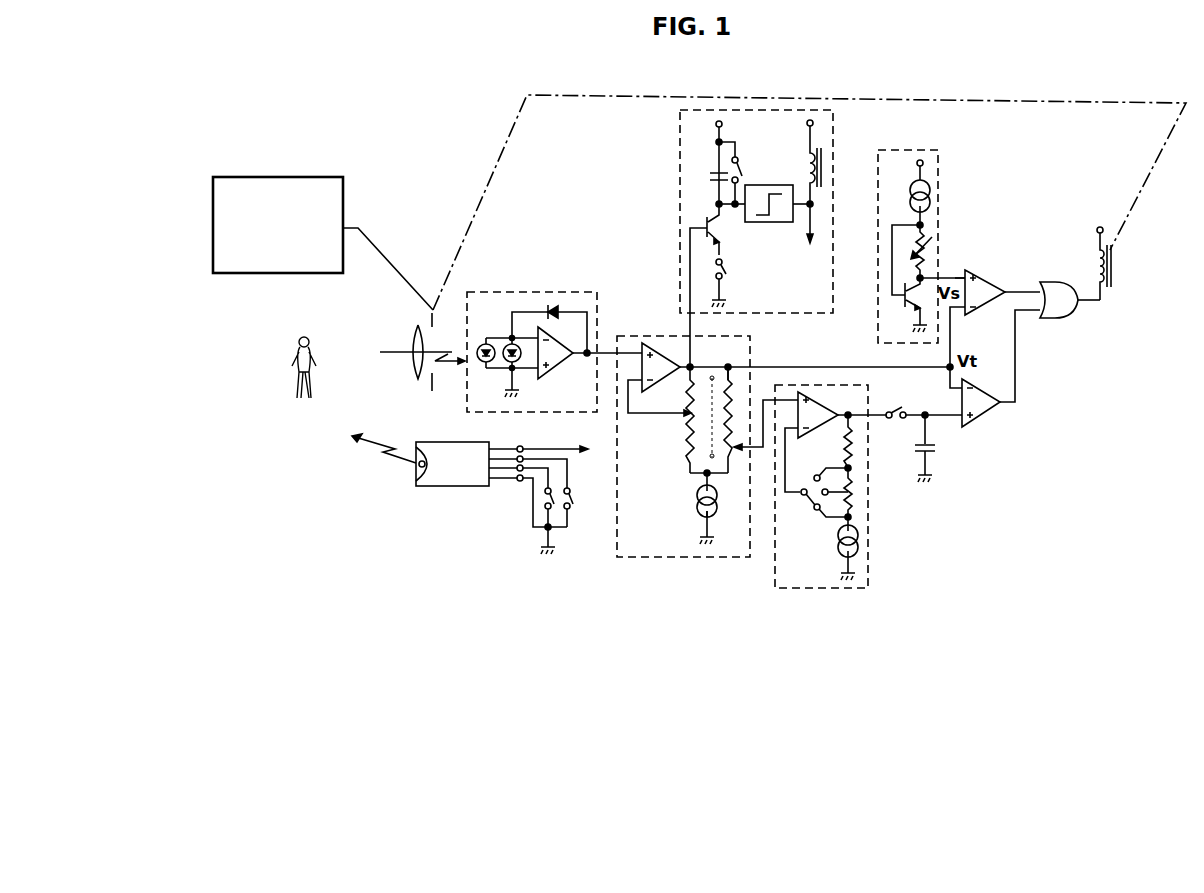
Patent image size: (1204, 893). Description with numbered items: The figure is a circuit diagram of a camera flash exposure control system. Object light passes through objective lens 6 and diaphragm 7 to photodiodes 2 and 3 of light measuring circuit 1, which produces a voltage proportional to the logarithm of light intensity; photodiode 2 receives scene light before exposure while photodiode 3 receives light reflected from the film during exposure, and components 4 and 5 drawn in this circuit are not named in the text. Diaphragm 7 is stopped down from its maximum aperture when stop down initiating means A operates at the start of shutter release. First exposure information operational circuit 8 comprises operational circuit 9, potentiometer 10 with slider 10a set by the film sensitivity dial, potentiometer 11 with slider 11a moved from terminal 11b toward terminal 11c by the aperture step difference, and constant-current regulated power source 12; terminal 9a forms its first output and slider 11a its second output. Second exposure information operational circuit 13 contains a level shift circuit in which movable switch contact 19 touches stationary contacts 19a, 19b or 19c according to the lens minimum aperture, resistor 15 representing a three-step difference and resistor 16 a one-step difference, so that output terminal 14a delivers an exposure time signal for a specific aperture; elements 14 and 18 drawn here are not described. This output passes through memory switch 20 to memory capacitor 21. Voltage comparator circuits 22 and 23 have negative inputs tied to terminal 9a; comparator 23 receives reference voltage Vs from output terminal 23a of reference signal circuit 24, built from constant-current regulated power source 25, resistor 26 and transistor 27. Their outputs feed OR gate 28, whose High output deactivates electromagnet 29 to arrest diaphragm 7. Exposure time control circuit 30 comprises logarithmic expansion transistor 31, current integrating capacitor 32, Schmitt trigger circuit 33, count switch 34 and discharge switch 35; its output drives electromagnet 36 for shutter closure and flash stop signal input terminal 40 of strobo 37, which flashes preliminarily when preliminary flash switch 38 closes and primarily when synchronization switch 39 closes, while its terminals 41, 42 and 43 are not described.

The diaphragm stop down initiating means A is at (290, 176).
The light measuring circuit 1 is at (527, 291).
The photodiode 2 is at (486, 364).
The photodiode 3 is at (514, 364).
The operational amplifier 4 is at (556, 367).
The logarithmic compression diode 5 is at (556, 318).
The objective lens 6 is at (411, 363).
The diaphragm 7 is at (430, 382).
The first exposure information operational circuit 8 is at (667, 560).
The operational circuit 9 is at (655, 378).
The terminal 9a is at (693, 365).
The potentiometer 10 is at (686, 440).
The slider 10a is at (647, 414).
The potentiometer 11 is at (732, 415).
The slider 11a is at (726, 452).
The terminal 11b is at (733, 405).
The terminal 11c is at (736, 513).
The constant-current regulated power source 12 is at (696, 516).
The second exposure information operational circuit 13 is at (836, 592).
The operational amplifier 14 is at (822, 397).
The output terminal 14a is at (852, 412).
The resistor 15 is at (853, 457).
The resistor 16 is at (853, 490).
The constant current source 18 is at (859, 547).
The movable switch contact 19 is at (807, 496).
The stationary contact 19a is at (818, 474).
The stationary contact 19b is at (823, 488).
The stationary contact 19c is at (818, 512).
The memory switch 20 is at (898, 419).
The memory capacitor 21 is at (933, 447).
The voltage comparator circuit 22 is at (986, 418).
The voltage comparator circuit 23 is at (982, 310).
The output terminal 23a is at (957, 277).
The reference signal circuit 24 is at (928, 150).
The constant-current regulated power source 25 is at (930, 195).
The resistor 26 is at (926, 241).
The transistor 27 is at (898, 307).
The OR gate 28 is at (1045, 318).
The electromagnet 29 is at (1112, 273).
The exposure time control circuit 30 is at (838, 150).
The transistor 31 is at (725, 230).
The current integrating capacitor 32 is at (710, 176).
The Schmitt trigger circuit 33 is at (755, 186).
The count switch 34 is at (724, 270).
The discharge switch 35 is at (739, 170).
The electromagnet 36 is at (823, 168).
The strobo 37 is at (431, 487).
The preliminary flash switch 38 is at (571, 497).
The synchronization switch 39 is at (565, 517).
The flash stop signal input terminal 40 is at (525, 437).
The terminal 41 is at (517, 461).
The terminal 42 is at (519, 470).
The terminal 43 is at (520, 481).